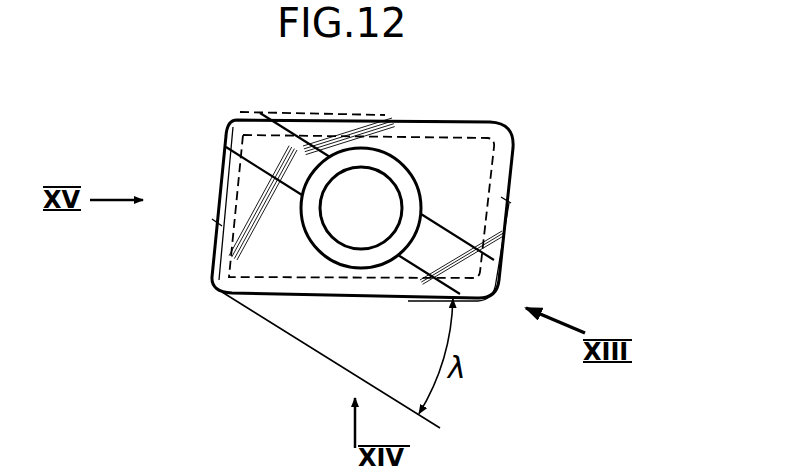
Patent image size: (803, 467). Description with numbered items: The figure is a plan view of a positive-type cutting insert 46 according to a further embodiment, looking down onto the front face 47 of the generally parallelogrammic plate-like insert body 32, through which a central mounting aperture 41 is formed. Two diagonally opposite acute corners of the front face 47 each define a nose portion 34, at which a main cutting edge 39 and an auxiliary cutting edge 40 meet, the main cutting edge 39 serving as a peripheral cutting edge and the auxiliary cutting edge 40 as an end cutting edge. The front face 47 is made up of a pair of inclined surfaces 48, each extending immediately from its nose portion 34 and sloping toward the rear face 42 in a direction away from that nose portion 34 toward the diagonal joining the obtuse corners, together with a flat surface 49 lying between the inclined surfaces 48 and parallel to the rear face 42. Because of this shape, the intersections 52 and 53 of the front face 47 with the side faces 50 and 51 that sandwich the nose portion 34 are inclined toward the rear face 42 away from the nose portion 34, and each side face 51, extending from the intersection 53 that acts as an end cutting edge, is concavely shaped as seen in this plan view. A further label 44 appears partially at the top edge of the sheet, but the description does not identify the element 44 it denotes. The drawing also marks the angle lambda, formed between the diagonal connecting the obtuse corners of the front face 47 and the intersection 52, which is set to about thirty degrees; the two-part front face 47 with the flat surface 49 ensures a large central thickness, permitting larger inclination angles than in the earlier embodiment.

The insert body 32 is at (542, 260).
The nose portion 34 is at (519, 129).
The main cutting edge 39 is at (482, 119).
The auxiliary cutting edge 40 is at (521, 146).
The central mounting aperture 41 is at (370, 175).
The rear face 42 is at (696, 10).
The bottom face 44 is at (572, 5).
The cutting insert 46 is at (578, 72).
The front face 47 is at (186, 66).
The inclined surface 48 is at (294, 128).
The flat surface 49 is at (238, 116).
The side face 50 is at (391, 119).
The side face 51 is at (509, 199).
The intersection 52 is at (433, 120).
The intersection 53 is at (511, 176).